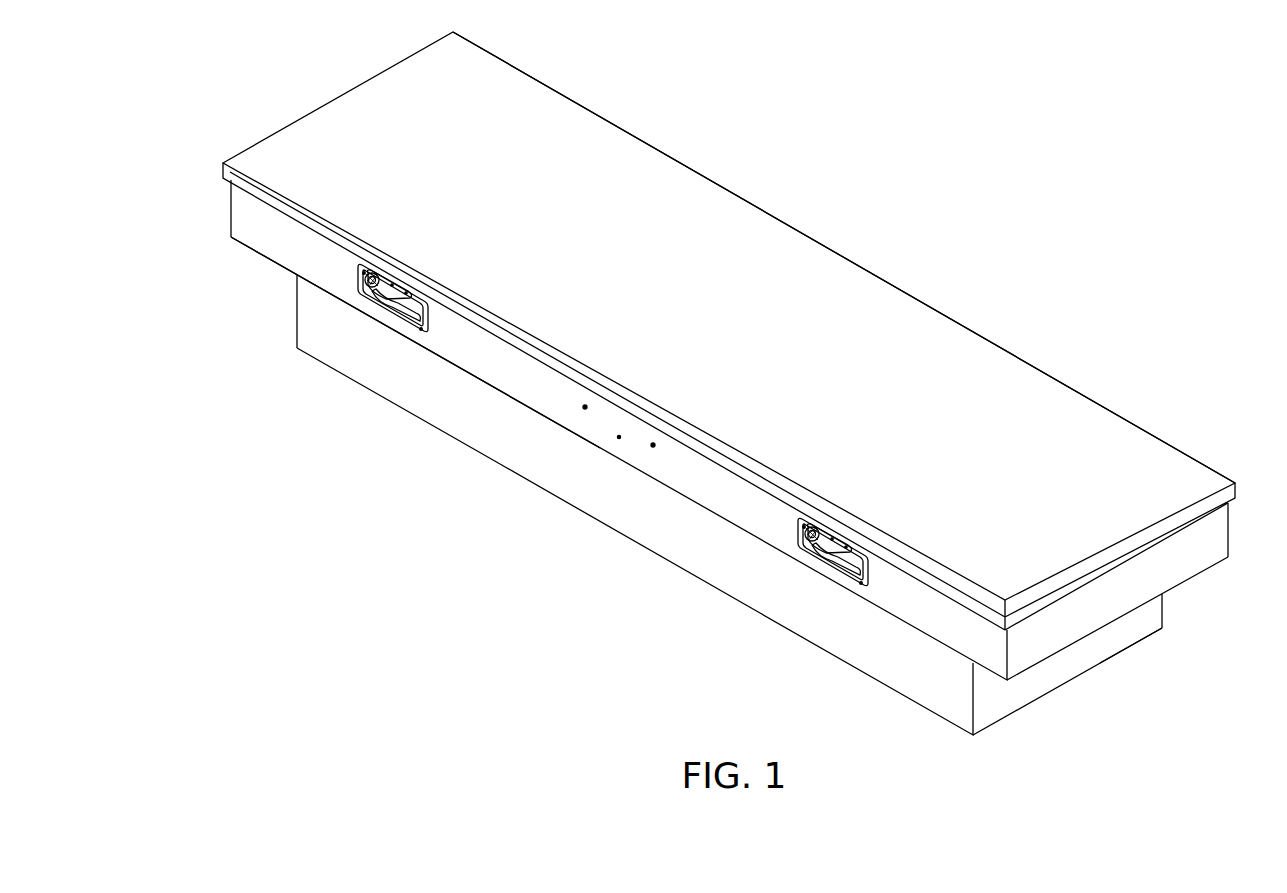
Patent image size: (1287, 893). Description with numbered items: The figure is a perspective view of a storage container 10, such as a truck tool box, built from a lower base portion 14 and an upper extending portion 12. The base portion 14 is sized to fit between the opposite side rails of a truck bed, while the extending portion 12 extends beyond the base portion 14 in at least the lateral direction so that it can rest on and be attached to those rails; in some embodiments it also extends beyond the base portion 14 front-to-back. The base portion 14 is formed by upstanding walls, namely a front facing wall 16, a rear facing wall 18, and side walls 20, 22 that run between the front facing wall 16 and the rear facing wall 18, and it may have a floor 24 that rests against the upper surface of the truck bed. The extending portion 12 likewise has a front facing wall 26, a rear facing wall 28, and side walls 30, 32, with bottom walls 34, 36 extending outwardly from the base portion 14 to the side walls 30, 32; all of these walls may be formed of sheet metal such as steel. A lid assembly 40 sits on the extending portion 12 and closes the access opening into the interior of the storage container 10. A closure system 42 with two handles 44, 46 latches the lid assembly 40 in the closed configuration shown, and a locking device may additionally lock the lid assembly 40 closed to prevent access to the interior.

The storage container 10 is at (1053, 152).
The extending portion 12 is at (1063, 305).
The base portion 14 is at (487, 508).
The front facing wall 16 is at (750, 604).
The rear facing wall 18 is at (1163, 607).
The side wall 20 is at (297, 313).
The side wall 22 is at (1085, 660).
The floor 24 is at (652, 554).
The front facing wall 26 is at (498, 363).
The rear facing wall 28 is at (806, 234).
The side wall 30 is at (230, 212).
The side wall 32 is at (1218, 528).
The bottom wall 34 is at (258, 253).
The bottom wall 36 is at (1038, 667).
The lid assembly 40 is at (608, 126).
The closure system 42 is at (372, 346).
The handle 44 is at (372, 283).
The handle 46 is at (812, 533).